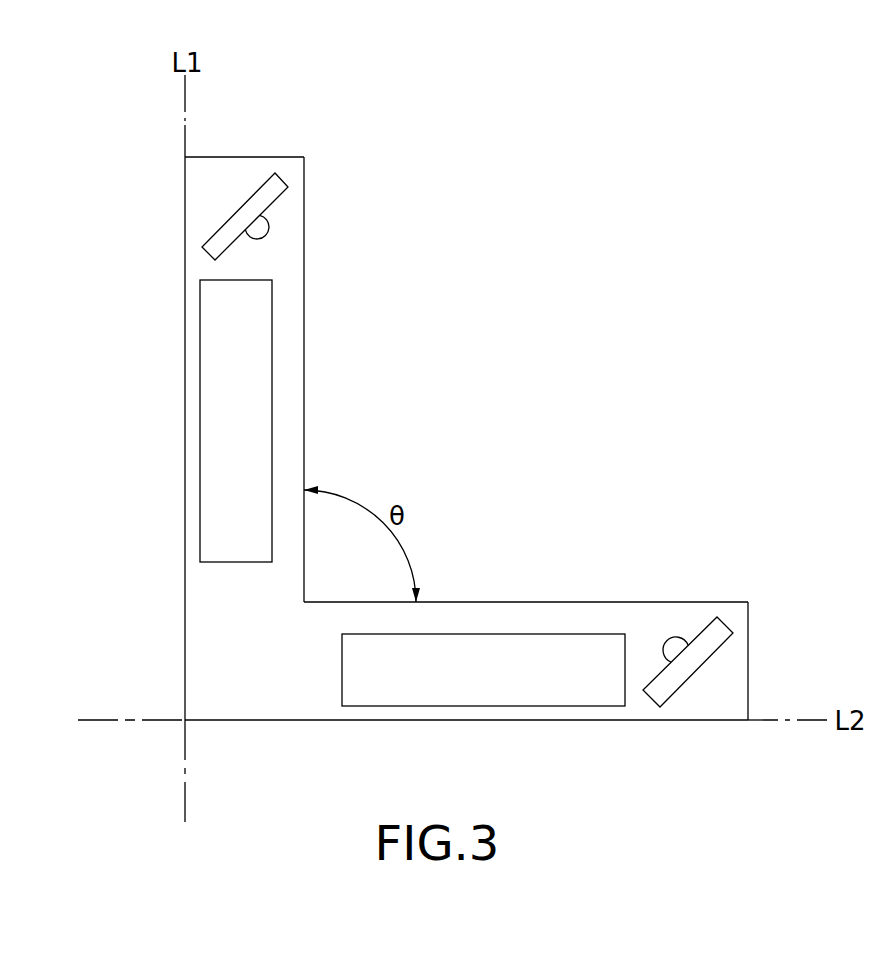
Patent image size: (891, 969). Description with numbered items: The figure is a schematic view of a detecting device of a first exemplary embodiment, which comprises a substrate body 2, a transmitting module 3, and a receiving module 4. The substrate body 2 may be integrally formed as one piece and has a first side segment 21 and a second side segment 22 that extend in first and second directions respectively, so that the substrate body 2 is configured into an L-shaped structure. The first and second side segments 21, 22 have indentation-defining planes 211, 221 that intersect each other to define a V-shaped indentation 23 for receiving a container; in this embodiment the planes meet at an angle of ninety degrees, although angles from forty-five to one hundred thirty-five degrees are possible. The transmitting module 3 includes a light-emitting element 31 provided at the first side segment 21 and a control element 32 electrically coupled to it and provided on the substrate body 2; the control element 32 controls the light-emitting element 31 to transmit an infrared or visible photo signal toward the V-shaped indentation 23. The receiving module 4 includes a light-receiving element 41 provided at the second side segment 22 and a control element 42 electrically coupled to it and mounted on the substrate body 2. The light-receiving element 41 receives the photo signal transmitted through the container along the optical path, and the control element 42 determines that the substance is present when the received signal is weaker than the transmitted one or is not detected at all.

The substrate body 2 is at (400, 485).
The first side segment 21 is at (185, 328).
The indentation-defining plane 211 is at (304, 180).
The second side segment 22 is at (603, 722).
The indentation-defining plane 221 is at (722, 601).
The V-shaped indentation 23 is at (420, 419).
The transmitting module 3 is at (236, 196).
The light-emitting element 31 is at (265, 231).
The control element 32 is at (217, 452).
The receiving module 4 is at (650, 662).
The light-receiving element 41 is at (675, 645).
The control element 42 is at (500, 633).